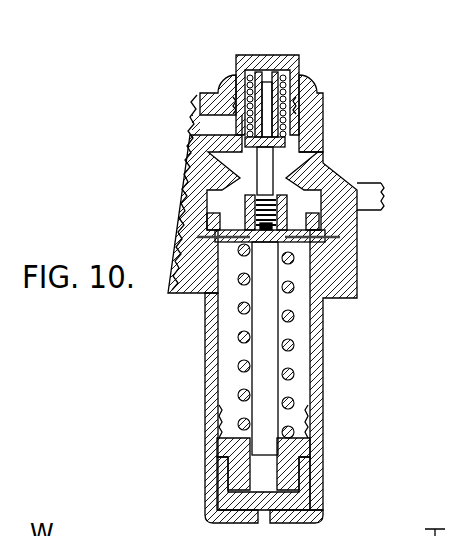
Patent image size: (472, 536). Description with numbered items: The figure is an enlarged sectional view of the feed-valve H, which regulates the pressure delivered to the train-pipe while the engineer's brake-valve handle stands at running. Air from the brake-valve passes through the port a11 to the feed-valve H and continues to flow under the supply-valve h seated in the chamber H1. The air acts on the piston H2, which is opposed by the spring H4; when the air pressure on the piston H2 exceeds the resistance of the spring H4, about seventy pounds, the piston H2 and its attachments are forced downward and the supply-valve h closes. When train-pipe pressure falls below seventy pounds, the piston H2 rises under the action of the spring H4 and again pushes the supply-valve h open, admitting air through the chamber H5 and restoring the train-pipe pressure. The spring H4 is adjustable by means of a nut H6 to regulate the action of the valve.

The feed-valve H is at (358, 262).
The chamber H1 is at (222, 92).
The piston H2 is at (370, 174).
The spring H4 is at (232, 338).
The chamber H5 is at (245, 200).
The nut H6 is at (215, 428).
The supply-valve h is at (292, 143).
The port a11 is at (183, 155).